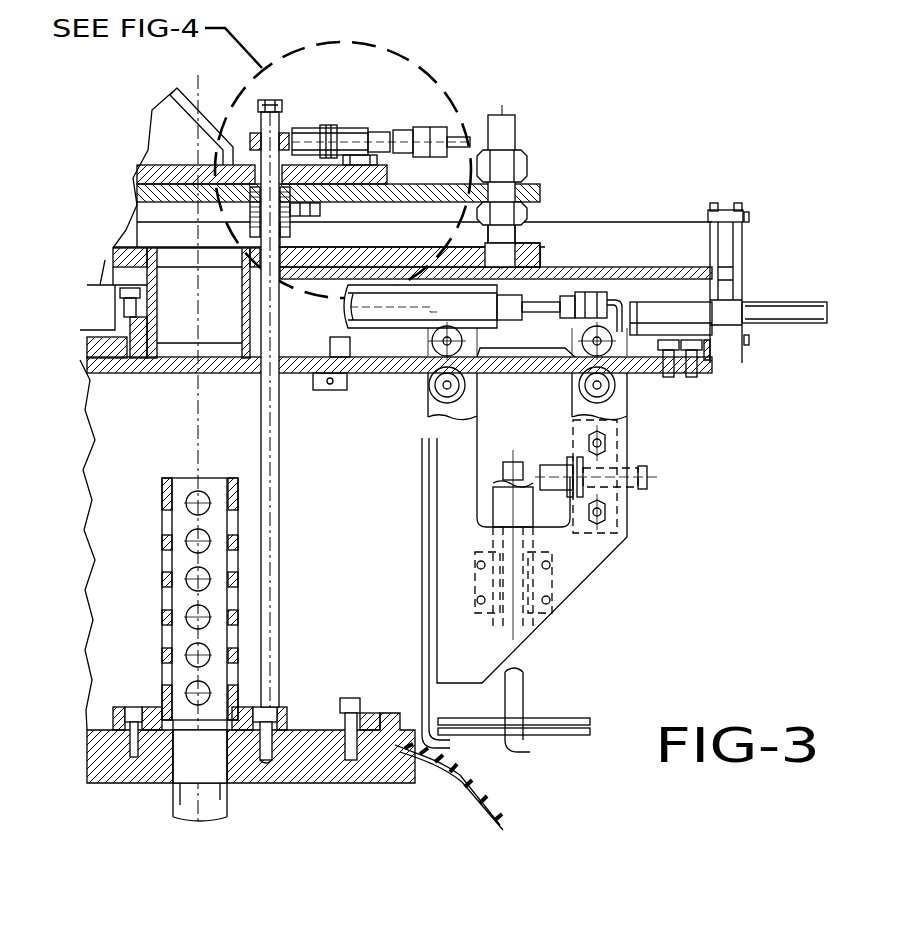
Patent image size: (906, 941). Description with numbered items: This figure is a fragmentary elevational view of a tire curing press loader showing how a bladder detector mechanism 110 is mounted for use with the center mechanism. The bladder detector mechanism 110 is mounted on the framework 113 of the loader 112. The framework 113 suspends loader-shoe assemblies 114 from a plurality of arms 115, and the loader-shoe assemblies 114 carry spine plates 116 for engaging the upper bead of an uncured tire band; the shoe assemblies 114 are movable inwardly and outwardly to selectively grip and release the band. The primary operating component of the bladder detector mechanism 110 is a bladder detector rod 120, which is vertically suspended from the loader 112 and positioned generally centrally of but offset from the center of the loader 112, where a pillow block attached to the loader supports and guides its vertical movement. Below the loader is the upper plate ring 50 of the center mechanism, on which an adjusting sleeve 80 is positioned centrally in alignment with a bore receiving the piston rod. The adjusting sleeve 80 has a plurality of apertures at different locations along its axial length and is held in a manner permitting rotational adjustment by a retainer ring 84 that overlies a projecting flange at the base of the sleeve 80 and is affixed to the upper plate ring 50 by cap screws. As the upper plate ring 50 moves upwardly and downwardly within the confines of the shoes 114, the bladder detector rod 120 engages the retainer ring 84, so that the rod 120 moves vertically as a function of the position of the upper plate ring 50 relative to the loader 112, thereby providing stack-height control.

The upper plate ring 50 is at (300, 775).
The adjusting sleeve 80 is at (162, 497).
The retainer ring 84 is at (287, 720).
The bladder detector mechanism 110 is at (372, 108).
The loader 112 is at (640, 195).
The framework 113 is at (545, 172).
The loader-shoe assemblies 114 is at (588, 582).
The arms 115 is at (642, 365).
The spine plates 116 is at (452, 750).
The bladder detector rod 120 is at (280, 123).